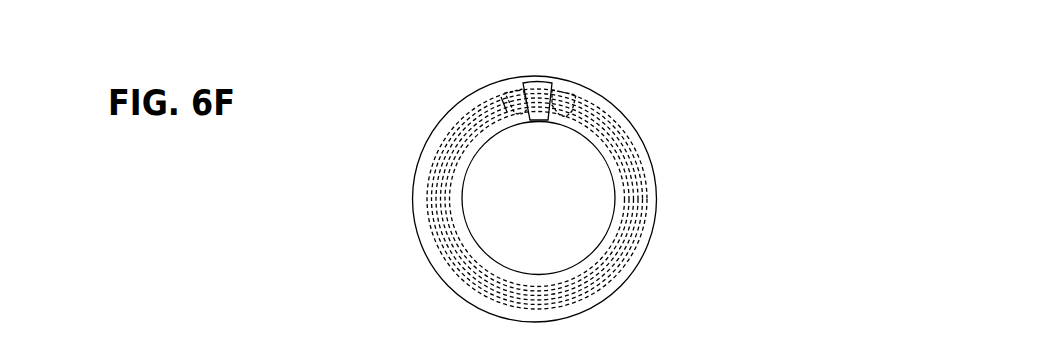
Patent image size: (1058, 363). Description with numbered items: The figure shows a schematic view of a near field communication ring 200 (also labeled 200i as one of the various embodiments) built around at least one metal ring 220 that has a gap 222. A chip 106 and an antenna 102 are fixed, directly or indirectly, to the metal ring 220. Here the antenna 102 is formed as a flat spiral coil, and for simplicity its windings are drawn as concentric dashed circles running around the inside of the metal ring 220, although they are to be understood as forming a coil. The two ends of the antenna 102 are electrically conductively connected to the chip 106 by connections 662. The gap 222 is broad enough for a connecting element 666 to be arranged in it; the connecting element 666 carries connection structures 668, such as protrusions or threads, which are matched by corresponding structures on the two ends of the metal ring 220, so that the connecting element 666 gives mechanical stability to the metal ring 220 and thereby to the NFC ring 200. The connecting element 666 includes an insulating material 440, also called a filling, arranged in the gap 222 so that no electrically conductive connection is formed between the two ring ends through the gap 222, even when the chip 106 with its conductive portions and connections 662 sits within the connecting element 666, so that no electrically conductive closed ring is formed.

The near field communication ring 200 is at (625, 174).
The ring device variant 200i is at (762, 118).
The antenna 102 is at (418, 197).
The metal ring 220 is at (440, 277).
The chip 106 is at (552, 84).
The gap 222 is at (441, 70).
The insulating material 440 is at (441, 70).
The connecting element 666 is at (523, 83).
The connection structures 668 is at (574, 100).
The connections 662 is at (507, 112).